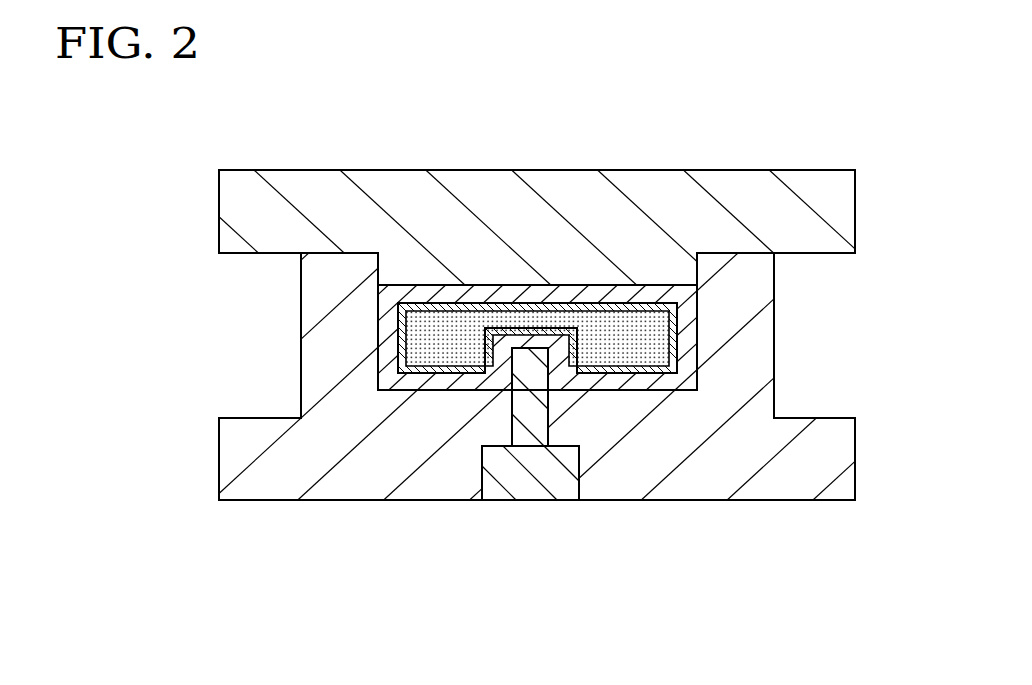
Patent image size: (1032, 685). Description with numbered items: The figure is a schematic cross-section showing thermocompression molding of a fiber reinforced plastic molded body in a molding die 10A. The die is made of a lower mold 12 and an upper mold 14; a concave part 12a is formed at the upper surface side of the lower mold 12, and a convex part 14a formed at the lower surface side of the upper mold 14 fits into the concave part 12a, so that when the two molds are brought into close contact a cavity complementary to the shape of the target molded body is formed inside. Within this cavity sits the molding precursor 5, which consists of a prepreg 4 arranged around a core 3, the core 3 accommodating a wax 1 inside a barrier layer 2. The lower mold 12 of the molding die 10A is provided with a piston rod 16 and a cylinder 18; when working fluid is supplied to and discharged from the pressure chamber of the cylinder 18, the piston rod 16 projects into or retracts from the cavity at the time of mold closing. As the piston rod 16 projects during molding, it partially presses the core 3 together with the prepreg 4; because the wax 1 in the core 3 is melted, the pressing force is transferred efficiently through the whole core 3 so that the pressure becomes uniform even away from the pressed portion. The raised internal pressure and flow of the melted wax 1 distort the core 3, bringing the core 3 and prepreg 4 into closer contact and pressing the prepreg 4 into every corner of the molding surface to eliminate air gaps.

The wax 1 is at (447, 332).
The barrier layer 2 is at (677, 337).
The core 3 is at (590, 303).
The prepreg 4 is at (457, 382).
The molding precursor 5 is at (420, 392).
The molding die 10A is at (813, 170).
The lower mold 12 is at (767, 502).
The concave part 12a is at (657, 382).
The upper mold 14 is at (299, 170).
The convex part 14a is at (420, 268).
The piston rod 16 is at (548, 416).
The cylinder 18 is at (530, 479).